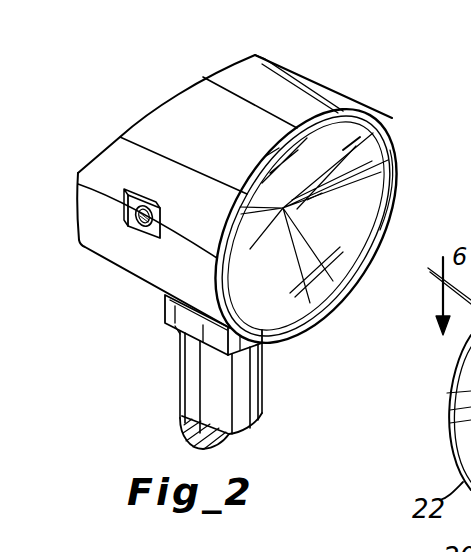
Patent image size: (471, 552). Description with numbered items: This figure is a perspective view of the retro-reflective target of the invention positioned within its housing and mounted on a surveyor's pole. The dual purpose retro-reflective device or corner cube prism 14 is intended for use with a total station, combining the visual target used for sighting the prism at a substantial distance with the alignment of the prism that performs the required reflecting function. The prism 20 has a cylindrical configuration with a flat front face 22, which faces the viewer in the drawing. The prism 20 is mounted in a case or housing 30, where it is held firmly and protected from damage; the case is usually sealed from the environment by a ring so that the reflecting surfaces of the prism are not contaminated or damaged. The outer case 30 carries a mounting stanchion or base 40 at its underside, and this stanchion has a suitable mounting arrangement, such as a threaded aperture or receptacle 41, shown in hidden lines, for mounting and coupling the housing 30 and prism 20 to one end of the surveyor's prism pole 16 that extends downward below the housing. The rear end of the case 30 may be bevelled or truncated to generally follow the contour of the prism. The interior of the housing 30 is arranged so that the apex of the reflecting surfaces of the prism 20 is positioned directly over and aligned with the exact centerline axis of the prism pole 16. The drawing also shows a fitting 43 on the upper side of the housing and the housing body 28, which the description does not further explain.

The corner cube prism 14 is at (369, 82).
The surveyor's prism pole 16 is at (243, 391).
The prism 20 is at (391, 160).
The flat front face 22 is at (343, 209).
The housing 28 is at (170, 98).
The housing 30 is at (108, 240).
The mounting stanchion 40 is at (166, 322).
The threaded aperture 41 is at (178, 330).
The threaded boss 43 is at (160, 193).